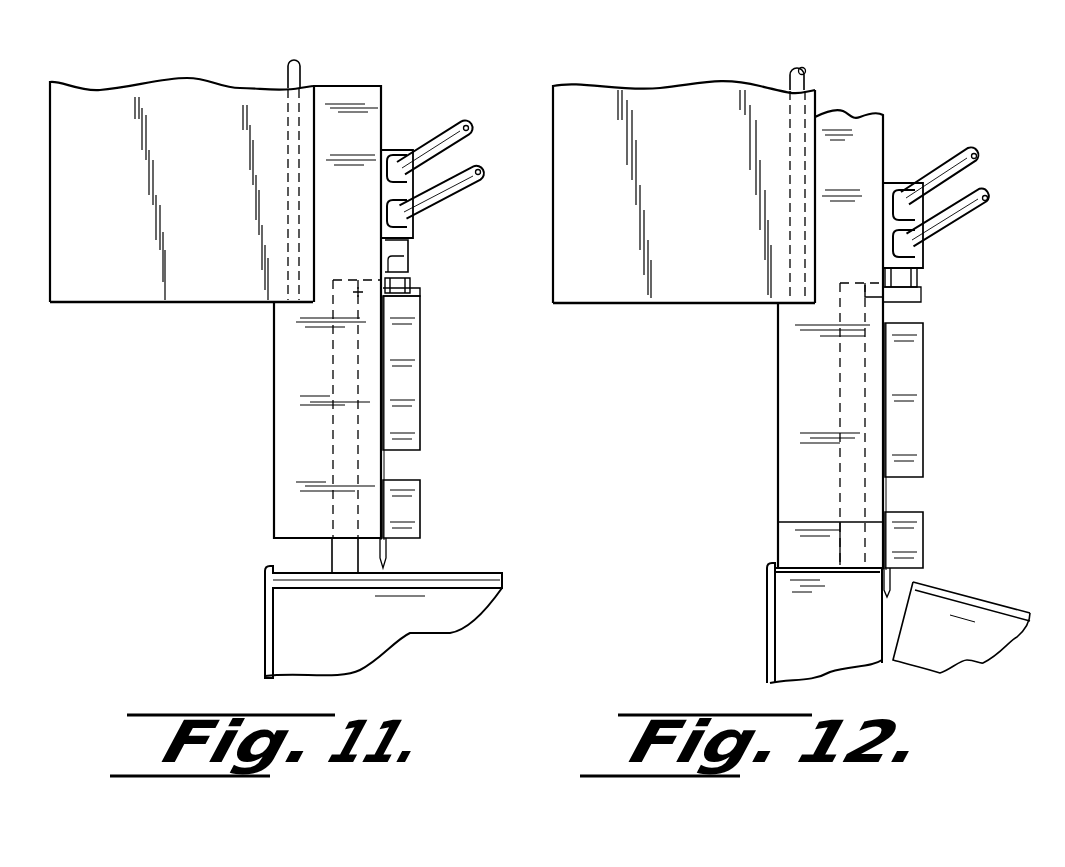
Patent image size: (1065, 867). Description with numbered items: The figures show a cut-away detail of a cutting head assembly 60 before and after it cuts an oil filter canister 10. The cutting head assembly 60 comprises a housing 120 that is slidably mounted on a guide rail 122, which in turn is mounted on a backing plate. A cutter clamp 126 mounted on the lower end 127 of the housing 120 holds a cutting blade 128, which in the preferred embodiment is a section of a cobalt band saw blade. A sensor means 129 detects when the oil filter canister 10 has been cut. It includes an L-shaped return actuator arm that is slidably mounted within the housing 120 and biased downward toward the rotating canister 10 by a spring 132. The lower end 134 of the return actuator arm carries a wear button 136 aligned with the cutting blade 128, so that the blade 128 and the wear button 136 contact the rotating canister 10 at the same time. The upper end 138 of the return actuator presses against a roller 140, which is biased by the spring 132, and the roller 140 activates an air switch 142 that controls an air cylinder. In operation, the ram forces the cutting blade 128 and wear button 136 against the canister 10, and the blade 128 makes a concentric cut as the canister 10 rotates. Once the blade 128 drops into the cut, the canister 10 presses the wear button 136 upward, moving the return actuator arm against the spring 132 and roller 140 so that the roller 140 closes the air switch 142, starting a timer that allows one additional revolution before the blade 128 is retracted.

In FIG. 11, the oil filter canister 10 is at (492, 574).
In FIG. 12, the oil filter canister 10 is at (767, 628).
In FIG. 11, the cutting head assembly 60 is at (383, 86).
In FIG. 11, the housing 120 is at (274, 366).
In FIG. 12, the housing 120 is at (830, 329).
In FIG. 11, the guide rail 122 is at (301, 67).
In FIG. 12, the guide rail 122 is at (807, 72).
In FIG. 11, the cutter clamp 126 is at (420, 497).
In FIG. 11, the lower end 127 is at (274, 498).
In FIG. 11, the cutting blade 128 is at (388, 557).
In FIG. 12, the cutting blade 128 is at (903, 582).
In FIG. 11, the sensor means 129 is at (340, 437).
In FIG. 12, the sensor means 129 is at (840, 460).
In FIG. 11, the spring 132 is at (413, 248).
In FIG. 11, the lower end 134 is at (332, 548).
In FIG. 12, the wear button 136 is at (850, 565).
In FIG. 11, the upper end 138 is at (408, 288).
In FIG. 11, the roller 140 is at (411, 270).
In FIG. 12, the roller 140 is at (920, 282).
In FIG. 11, the air switch 142 is at (395, 150).
In FIG. 12, the air switch 142 is at (903, 183).